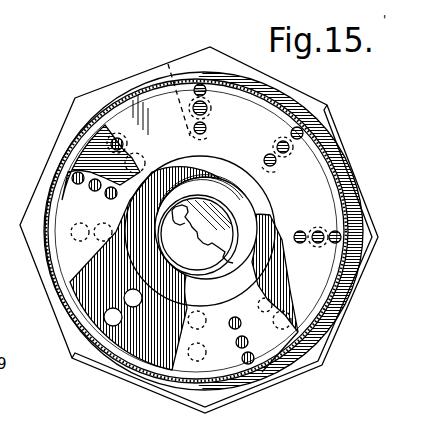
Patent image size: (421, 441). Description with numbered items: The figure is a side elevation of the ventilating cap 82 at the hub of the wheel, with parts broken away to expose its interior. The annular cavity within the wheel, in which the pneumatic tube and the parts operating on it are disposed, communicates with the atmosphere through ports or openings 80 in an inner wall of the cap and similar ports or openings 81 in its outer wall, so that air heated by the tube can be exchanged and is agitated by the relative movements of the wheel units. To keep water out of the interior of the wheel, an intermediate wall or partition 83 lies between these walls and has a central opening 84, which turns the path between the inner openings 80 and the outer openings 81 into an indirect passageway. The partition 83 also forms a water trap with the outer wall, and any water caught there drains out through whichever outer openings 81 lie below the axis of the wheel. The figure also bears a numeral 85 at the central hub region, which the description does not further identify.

The ports or openings in inner wall 80 is at (118, 319).
The ports or openings in outer wall 81 is at (297, 133).
The cap 82 is at (272, 218).
The intermediate wall or partition 83 is at (78, 252).
The central opening 84 is at (128, 207).
The shaft bore 85 is at (220, 202).